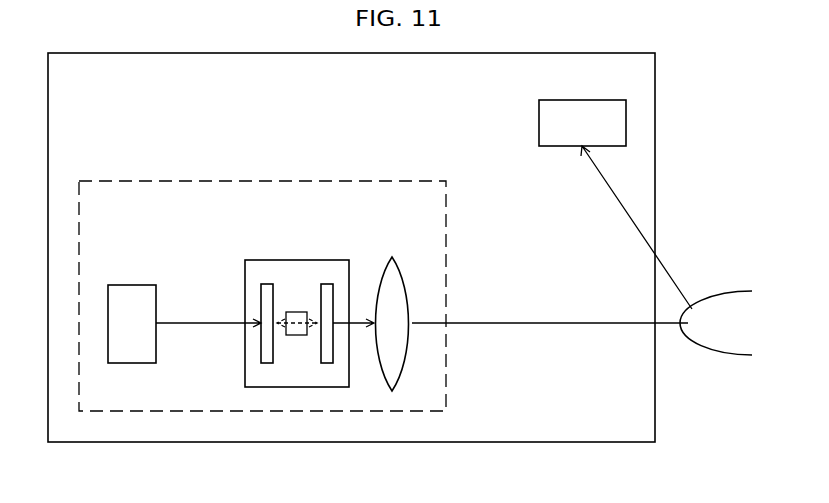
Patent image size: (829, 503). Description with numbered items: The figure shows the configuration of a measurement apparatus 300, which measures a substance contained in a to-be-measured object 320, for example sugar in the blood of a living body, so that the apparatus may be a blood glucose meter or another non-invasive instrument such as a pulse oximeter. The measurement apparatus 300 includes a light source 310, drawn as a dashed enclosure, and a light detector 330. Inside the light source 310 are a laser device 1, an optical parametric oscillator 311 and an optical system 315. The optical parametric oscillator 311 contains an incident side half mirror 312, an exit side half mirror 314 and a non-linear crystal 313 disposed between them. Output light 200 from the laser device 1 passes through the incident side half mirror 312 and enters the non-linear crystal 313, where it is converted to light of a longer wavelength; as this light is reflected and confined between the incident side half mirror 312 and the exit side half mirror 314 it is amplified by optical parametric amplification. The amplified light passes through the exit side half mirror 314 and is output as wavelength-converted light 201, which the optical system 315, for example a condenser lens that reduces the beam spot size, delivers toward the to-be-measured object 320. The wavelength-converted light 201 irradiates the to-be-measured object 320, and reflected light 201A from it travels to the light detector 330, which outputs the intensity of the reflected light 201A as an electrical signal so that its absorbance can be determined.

The laser device 1 is at (128, 285).
The output light 200 is at (186, 322).
The wavelength-converted light 201 is at (357, 320).
The reflected light 201A is at (609, 189).
The measurement apparatus 300 is at (655, 88).
The light source 310 is at (398, 179).
The optical parametric oscillator 311 is at (303, 260).
The incident side half mirror 312 is at (268, 363).
The non-linear crystal 313 is at (297, 335).
The exit side half mirror 314 is at (327, 363).
The optical system 315 is at (392, 258).
The to-be-measured object 320 is at (730, 293).
The light detector 330 is at (580, 100).